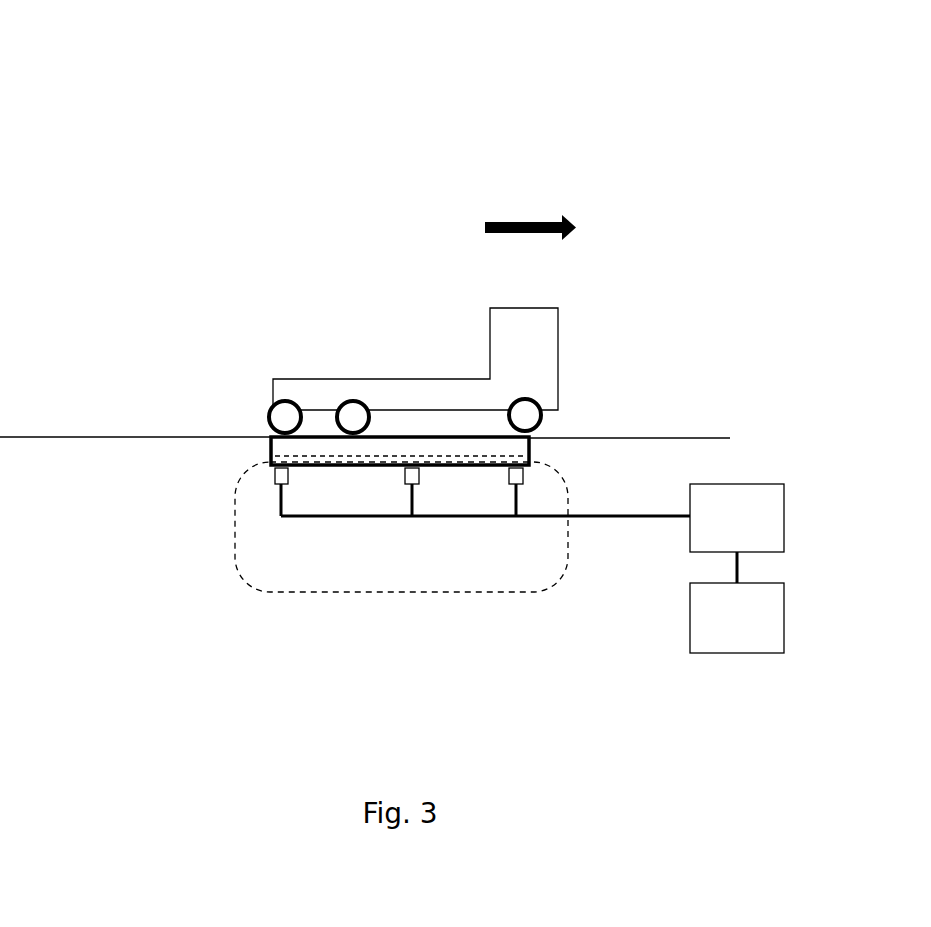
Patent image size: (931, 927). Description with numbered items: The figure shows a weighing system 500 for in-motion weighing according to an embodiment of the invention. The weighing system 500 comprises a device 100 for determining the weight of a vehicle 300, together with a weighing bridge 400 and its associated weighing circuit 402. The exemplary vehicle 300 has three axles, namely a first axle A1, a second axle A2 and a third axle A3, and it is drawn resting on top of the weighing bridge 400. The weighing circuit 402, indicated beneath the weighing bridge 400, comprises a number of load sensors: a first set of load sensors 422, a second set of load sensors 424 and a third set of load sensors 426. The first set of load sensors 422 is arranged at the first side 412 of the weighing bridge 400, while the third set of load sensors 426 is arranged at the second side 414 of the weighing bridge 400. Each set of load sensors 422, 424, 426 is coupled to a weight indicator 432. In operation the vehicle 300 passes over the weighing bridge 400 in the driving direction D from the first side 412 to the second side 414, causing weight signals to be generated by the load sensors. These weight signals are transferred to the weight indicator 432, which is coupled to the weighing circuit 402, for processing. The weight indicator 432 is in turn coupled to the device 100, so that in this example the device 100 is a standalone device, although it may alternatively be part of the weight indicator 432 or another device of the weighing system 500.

The weighing system 500 is at (98, 69).
The vehicle 300 is at (490, 322).
The weighing bridge 400 is at (413, 445).
The first side 412 is at (270, 447).
The second side 414 is at (531, 453).
The weighing circuit 402 is at (257, 585).
The first set of load sensors 422 is at (276, 487).
The second set of load sensors 424 is at (402, 487).
The third set of load sensors 426 is at (510, 486).
The weight indicator 432 is at (532, 518).
The device 100 is at (737, 602).
The first axle A1 is at (525, 415).
The second axle A2 is at (350, 415).
The third axle A3 is at (283, 415).
The driving direction D is at (530, 209).